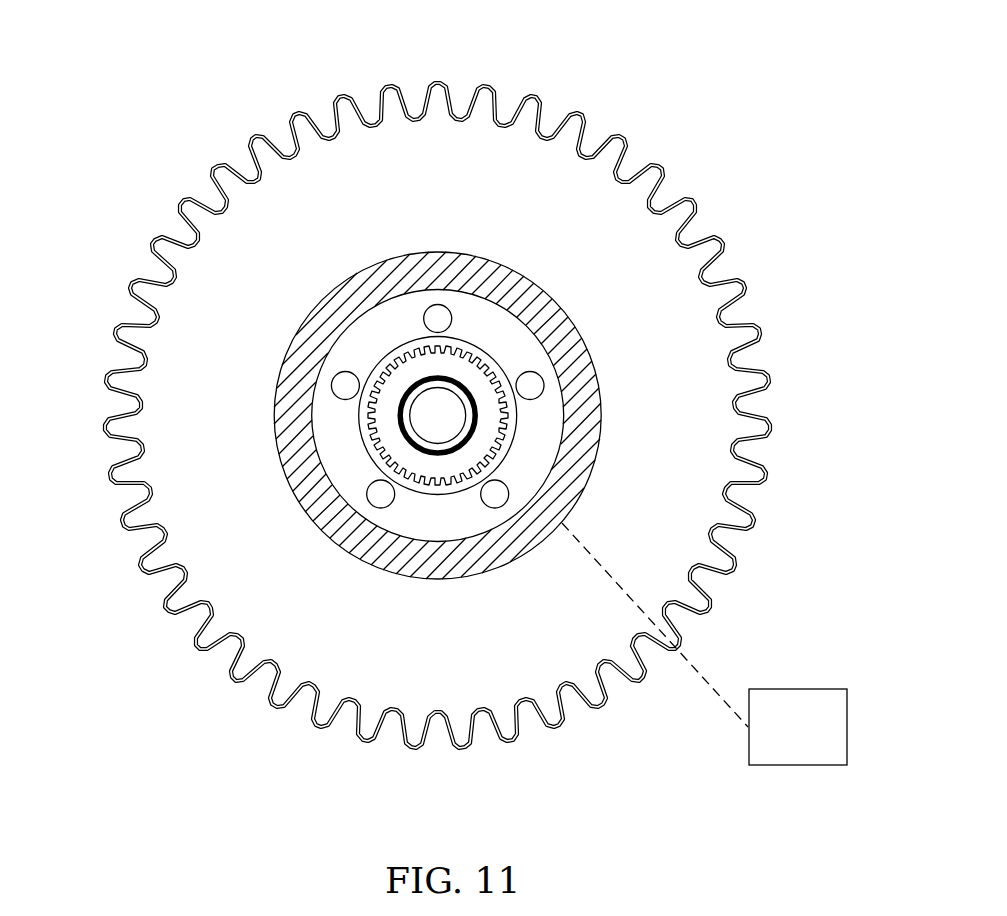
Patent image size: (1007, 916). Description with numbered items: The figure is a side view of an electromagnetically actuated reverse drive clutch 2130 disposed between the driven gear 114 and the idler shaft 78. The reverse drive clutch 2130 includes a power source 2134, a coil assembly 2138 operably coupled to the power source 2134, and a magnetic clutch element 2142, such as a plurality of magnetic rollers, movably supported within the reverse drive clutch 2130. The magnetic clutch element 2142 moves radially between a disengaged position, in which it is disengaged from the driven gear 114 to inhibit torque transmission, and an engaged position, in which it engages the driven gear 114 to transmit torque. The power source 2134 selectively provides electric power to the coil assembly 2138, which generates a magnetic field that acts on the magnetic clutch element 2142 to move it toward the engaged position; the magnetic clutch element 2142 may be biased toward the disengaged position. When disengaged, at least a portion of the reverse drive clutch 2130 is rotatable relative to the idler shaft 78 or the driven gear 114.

The driven gear 114 is at (441, 157).
The idler shaft 78 is at (425, 367).
The magnetic clutch element 2142 is at (453, 312).
The coil assembly 2138 is at (555, 415).
The reverse drive clutch 2130 is at (619, 532).
The power source 2134 is at (798, 688).